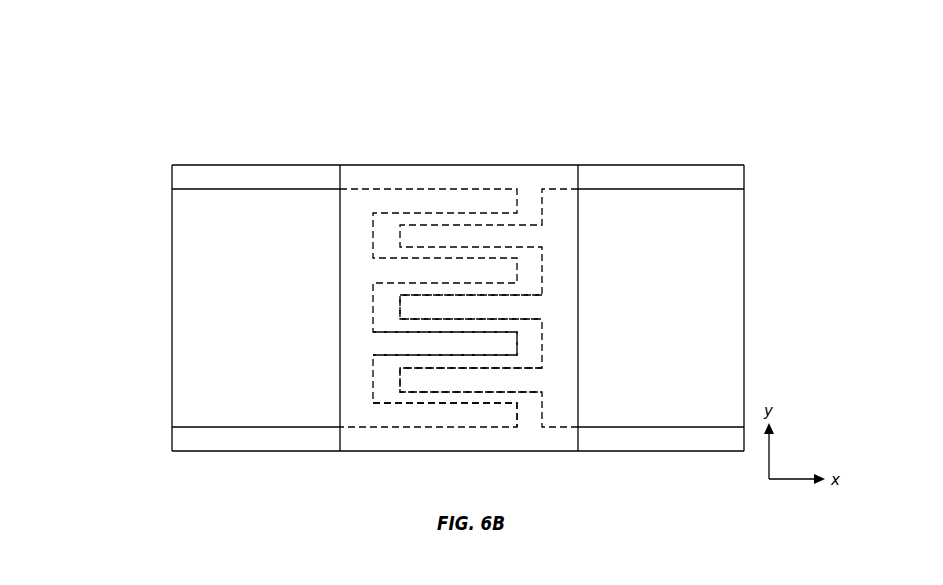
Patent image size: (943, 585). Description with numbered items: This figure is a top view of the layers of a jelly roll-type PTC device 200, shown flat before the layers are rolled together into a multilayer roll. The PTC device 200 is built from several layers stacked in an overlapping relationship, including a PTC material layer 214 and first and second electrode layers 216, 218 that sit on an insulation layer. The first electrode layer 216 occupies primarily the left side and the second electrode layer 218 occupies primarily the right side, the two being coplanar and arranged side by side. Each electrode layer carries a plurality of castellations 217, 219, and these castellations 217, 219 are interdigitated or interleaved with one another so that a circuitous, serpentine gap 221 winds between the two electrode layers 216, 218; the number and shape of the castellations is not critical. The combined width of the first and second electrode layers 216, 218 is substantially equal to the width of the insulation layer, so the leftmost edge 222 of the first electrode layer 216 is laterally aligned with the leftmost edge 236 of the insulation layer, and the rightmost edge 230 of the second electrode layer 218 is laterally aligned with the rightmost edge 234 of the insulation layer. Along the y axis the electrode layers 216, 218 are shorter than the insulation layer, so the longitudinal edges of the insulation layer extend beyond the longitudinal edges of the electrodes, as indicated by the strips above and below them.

The PTC device 200 is at (235, 98).
The PTC material layer 214 is at (386, 180).
The first electrode layer 216 is at (267, 316).
The castellations 217 is at (495, 343).
The second electrode layer 218 is at (672, 318).
The castellations 219 is at (417, 310).
The circuitous gap 221 is at (529, 196).
The leftmost edge 222 is at (108, 308).
The leftmost edge 236 is at (172, 268).
The rightmost edge 230 is at (811, 308).
The rightmost edge 234 is at (744, 272).